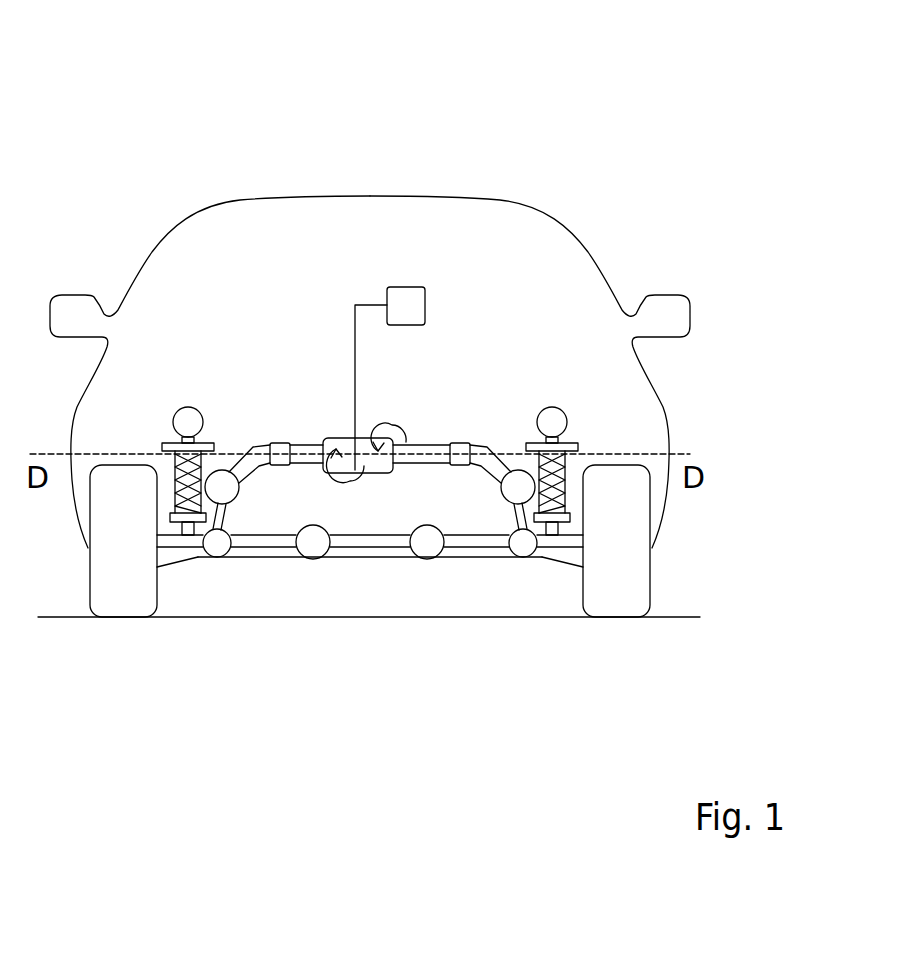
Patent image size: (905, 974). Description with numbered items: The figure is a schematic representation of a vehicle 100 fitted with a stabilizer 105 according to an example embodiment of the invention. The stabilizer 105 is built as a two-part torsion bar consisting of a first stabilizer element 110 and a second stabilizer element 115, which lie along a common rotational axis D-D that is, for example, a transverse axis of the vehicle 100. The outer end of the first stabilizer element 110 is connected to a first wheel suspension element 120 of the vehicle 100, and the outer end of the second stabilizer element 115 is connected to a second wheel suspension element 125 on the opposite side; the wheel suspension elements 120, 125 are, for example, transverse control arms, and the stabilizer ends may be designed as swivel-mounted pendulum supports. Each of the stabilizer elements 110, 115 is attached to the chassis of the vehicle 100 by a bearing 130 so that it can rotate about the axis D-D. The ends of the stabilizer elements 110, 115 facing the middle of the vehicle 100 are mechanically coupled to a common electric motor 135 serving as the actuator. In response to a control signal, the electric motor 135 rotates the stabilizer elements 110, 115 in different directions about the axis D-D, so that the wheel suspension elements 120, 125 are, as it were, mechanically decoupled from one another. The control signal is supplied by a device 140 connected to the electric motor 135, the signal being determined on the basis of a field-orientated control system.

The vehicle 100 is at (250, 197).
The stabilizer 105 is at (418, 444).
The first stabilizer element 110 is at (297, 464).
The second stabilizer element 115 is at (411, 464).
The first wheel suspension element 120 is at (175, 542).
The second wheel suspension element 125 is at (565, 545).
The bearing 130 is at (280, 443).
The electric motor 135 is at (376, 473).
The device 140 is at (406, 287).